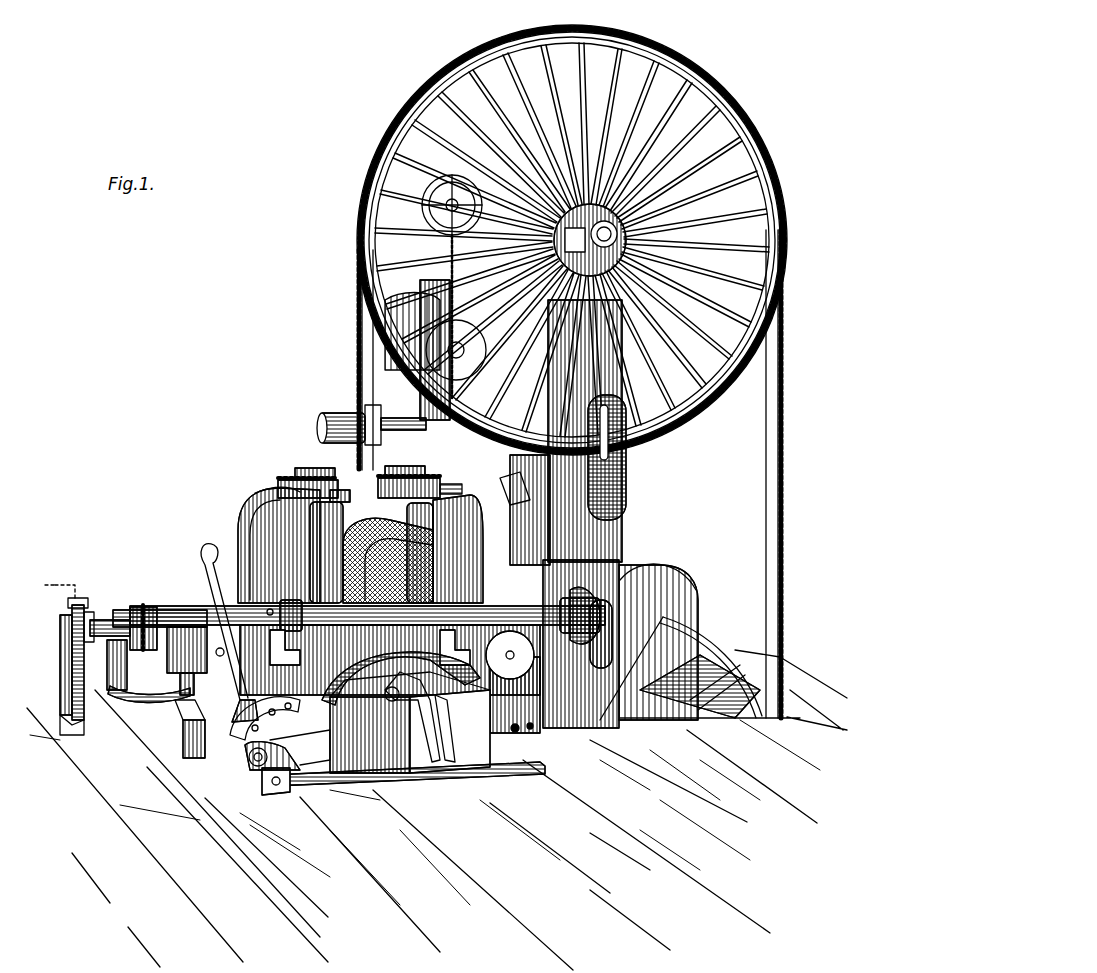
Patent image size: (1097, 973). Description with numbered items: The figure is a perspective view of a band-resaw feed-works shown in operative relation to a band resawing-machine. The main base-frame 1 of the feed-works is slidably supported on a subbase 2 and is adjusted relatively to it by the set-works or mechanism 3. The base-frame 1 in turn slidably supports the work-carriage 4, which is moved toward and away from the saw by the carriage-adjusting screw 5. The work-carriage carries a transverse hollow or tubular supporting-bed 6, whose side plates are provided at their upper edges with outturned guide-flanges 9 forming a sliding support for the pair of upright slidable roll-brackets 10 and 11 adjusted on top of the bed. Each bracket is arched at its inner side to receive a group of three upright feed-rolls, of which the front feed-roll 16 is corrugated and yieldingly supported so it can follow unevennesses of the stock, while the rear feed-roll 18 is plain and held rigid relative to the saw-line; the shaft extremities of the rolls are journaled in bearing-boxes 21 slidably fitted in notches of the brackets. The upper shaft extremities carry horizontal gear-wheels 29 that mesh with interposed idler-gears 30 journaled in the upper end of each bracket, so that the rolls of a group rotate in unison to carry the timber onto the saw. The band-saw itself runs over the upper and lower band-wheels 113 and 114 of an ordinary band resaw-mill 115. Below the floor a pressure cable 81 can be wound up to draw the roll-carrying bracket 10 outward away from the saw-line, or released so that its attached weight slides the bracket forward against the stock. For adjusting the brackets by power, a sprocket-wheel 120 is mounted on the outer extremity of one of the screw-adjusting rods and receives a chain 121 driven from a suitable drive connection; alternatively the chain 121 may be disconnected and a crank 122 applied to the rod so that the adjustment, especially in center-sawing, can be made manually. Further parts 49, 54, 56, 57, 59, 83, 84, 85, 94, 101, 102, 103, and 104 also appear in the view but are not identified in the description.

The main base-frame 1 is at (410, 722).
The subbase 2 is at (372, 778).
The set-works 3 is at (280, 727).
The work-carriage 4 is at (401, 676).
The carriage-adjusting screw 5 is at (412, 713).
The transverse hollow supporting-bed 6 is at (178, 610).
The outturned guide-flanges 9 is at (192, 612).
The upright slidable roll-bracket 10 is at (266, 545).
The upright slidable roll-bracket 11 is at (470, 555).
The front upright feed-roll 16 is at (335, 545).
The rear upright feed-roll 18 is at (355, 505).
The bearing-boxes 21 is at (262, 492).
The horizontal gear-wheels 29 is at (290, 482).
The idler-gears 30 is at (305, 468).
The shaft end 49 is at (96, 618).
The pipe 54 is at (140, 700).
The bracket 56 is at (182, 728).
The support rod 57 is at (175, 692).
The gear 59 is at (140, 606).
The cable 81 is at (518, 722).
The disk 83 is at (510, 651).
The link rod 84 is at (345, 727).
The pin 85 is at (216, 654).
The collar 94 is at (261, 600).
The lower housing 101 is at (544, 712).
The feed shaft 102 is at (290, 604).
The bracket 103 is at (369, 658).
The bearing 104 is at (582, 615).
The upper band-wheel 113 is at (676, 72).
The lower band-wheel 114 is at (704, 636).
The band resaw-mill 115 is at (622, 518).
The sprocket-wheel 120 is at (66, 648).
The chain 121 is at (62, 684).
The crank 122 is at (52, 583).